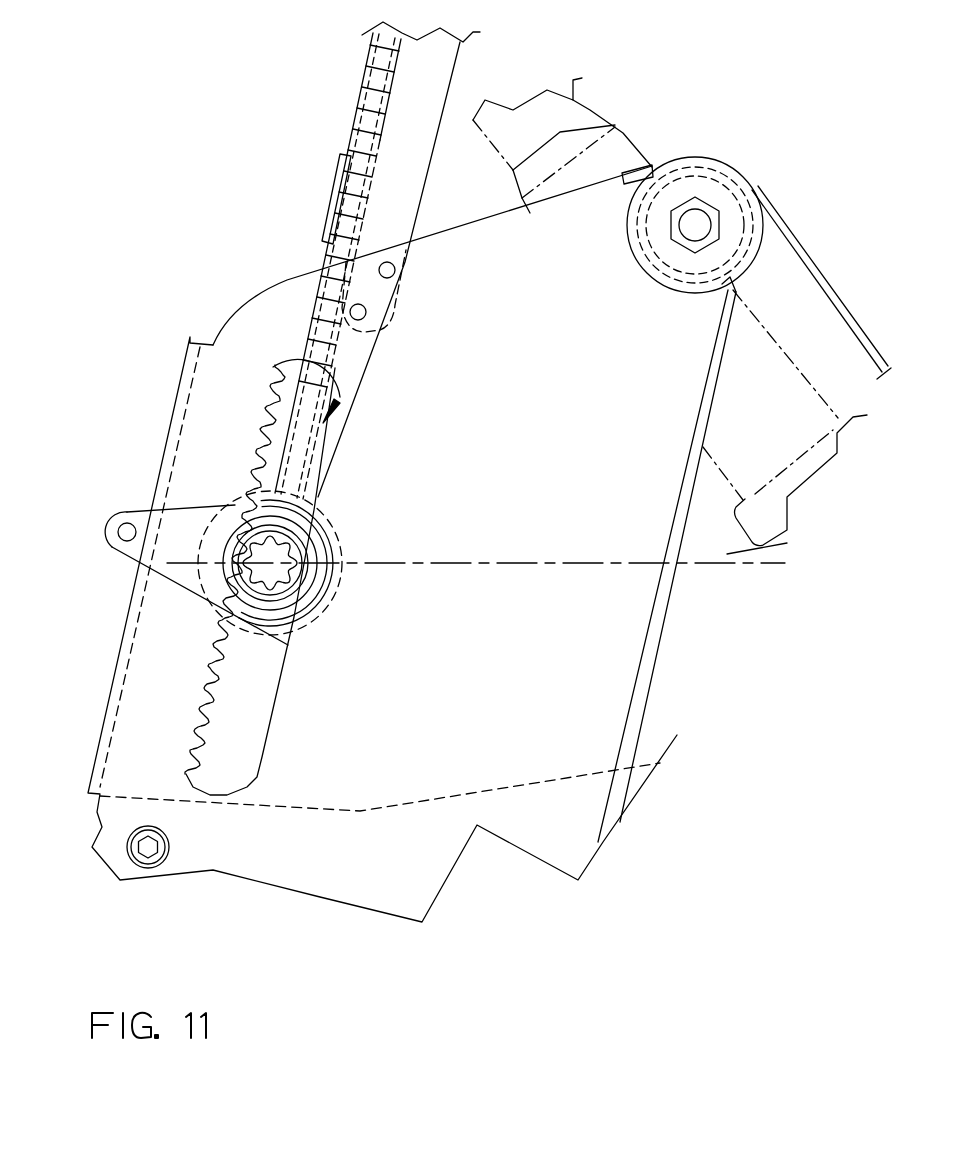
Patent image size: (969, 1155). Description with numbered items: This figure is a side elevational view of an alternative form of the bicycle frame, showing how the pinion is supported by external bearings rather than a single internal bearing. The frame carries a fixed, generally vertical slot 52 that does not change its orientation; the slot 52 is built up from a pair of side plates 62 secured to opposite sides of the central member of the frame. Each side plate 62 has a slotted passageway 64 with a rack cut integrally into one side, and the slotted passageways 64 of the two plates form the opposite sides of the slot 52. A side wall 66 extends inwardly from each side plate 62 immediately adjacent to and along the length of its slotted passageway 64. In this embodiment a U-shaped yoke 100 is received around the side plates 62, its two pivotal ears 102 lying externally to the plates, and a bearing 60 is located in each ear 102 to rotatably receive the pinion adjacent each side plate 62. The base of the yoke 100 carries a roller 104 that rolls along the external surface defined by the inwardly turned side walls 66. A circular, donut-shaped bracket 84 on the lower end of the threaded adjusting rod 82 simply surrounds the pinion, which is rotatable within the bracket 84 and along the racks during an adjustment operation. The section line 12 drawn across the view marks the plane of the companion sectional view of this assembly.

The section line 12- 12 is at (476, 533).
The slot 52 is at (410, 258).
The bearing 60 is at (270, 597).
The side plate 62 is at (572, 287).
The slotted passageway 64 is at (270, 725).
The side wall 66 is at (135, 778).
The threaded adjusting rod 82 is at (293, 443).
The bracket 84 is at (242, 647).
The yoke 100 is at (128, 435).
The pivotal ear 102 is at (198, 506).
The roller 104 is at (127, 510).